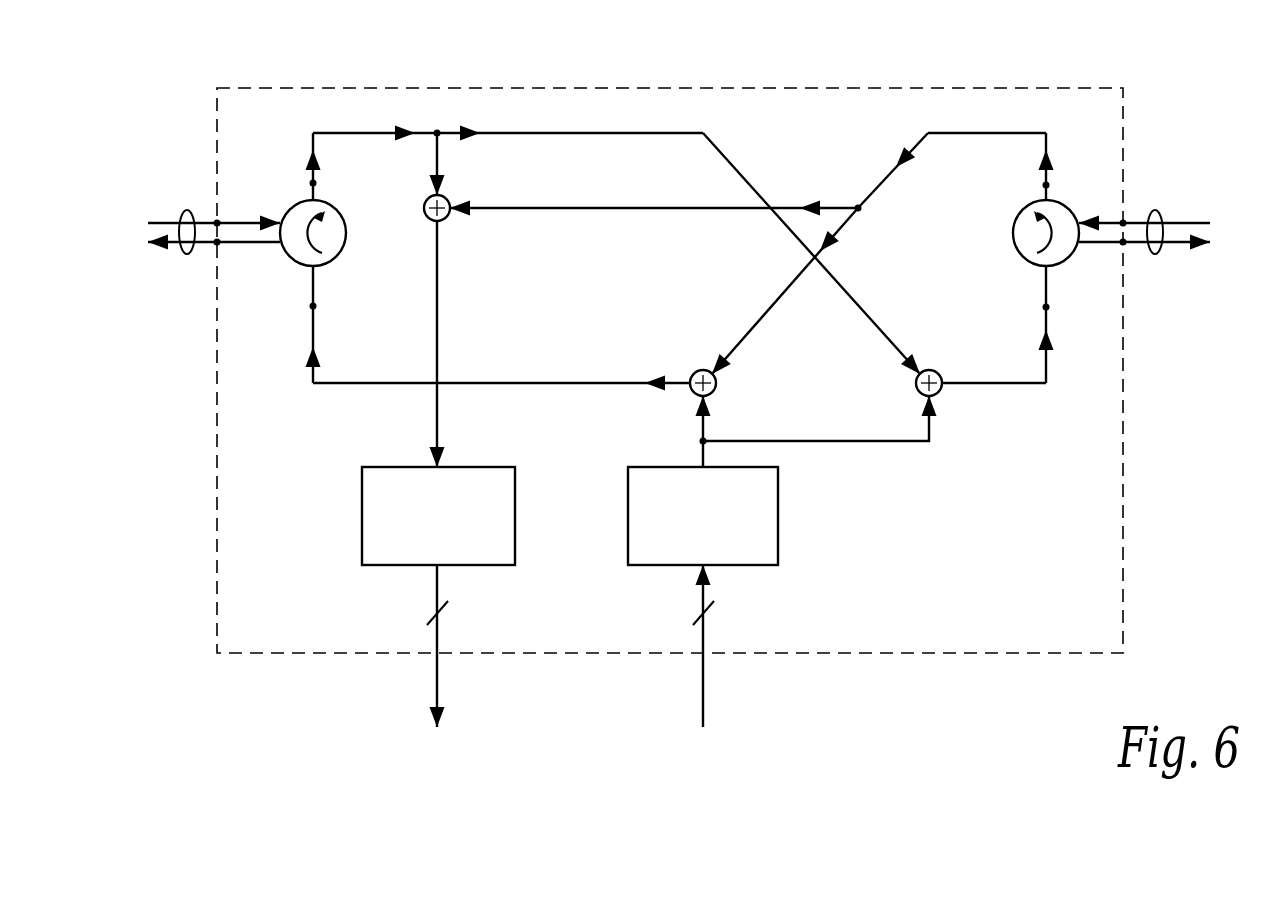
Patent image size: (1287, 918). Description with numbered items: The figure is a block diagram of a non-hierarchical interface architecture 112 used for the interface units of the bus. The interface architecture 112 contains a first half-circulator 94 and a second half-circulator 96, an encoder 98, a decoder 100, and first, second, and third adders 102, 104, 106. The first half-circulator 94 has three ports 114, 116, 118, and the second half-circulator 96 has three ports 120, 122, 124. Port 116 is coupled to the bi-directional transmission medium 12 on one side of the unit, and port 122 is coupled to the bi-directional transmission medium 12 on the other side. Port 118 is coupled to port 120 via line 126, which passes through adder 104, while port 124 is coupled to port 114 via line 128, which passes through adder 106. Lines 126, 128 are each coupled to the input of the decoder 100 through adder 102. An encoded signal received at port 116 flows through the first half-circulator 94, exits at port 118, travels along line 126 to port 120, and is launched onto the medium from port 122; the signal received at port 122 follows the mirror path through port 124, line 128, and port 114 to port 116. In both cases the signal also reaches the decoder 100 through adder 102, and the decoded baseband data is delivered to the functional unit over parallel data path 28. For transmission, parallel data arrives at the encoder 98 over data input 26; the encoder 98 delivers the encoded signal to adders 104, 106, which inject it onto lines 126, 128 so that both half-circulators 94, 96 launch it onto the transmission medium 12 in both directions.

The bi-directional transmission medium 12 is at (187, 254).
The data input 26 is at (703, 705).
The parallel data path 28 is at (437, 690).
The first half-circulator 94 is at (338, 258).
The second half-circulator 96 is at (1013, 240).
The encoder 98 is at (637, 467).
The decoder 100 is at (370, 467).
The first adder 102 is at (447, 197).
The second adder 104 is at (940, 373).
The third adder 106 is at (690, 375).
The interface architecture 112 is at (250, 88).
The port 114 is at (313, 306).
The port 116 is at (217, 223).
The port 118 is at (313, 183).
The port 120 is at (1046, 307).
The port 122 is at (1123, 223).
The port 124 is at (1046, 185).
The line 126 is at (725, 165).
The line 128 is at (880, 185).